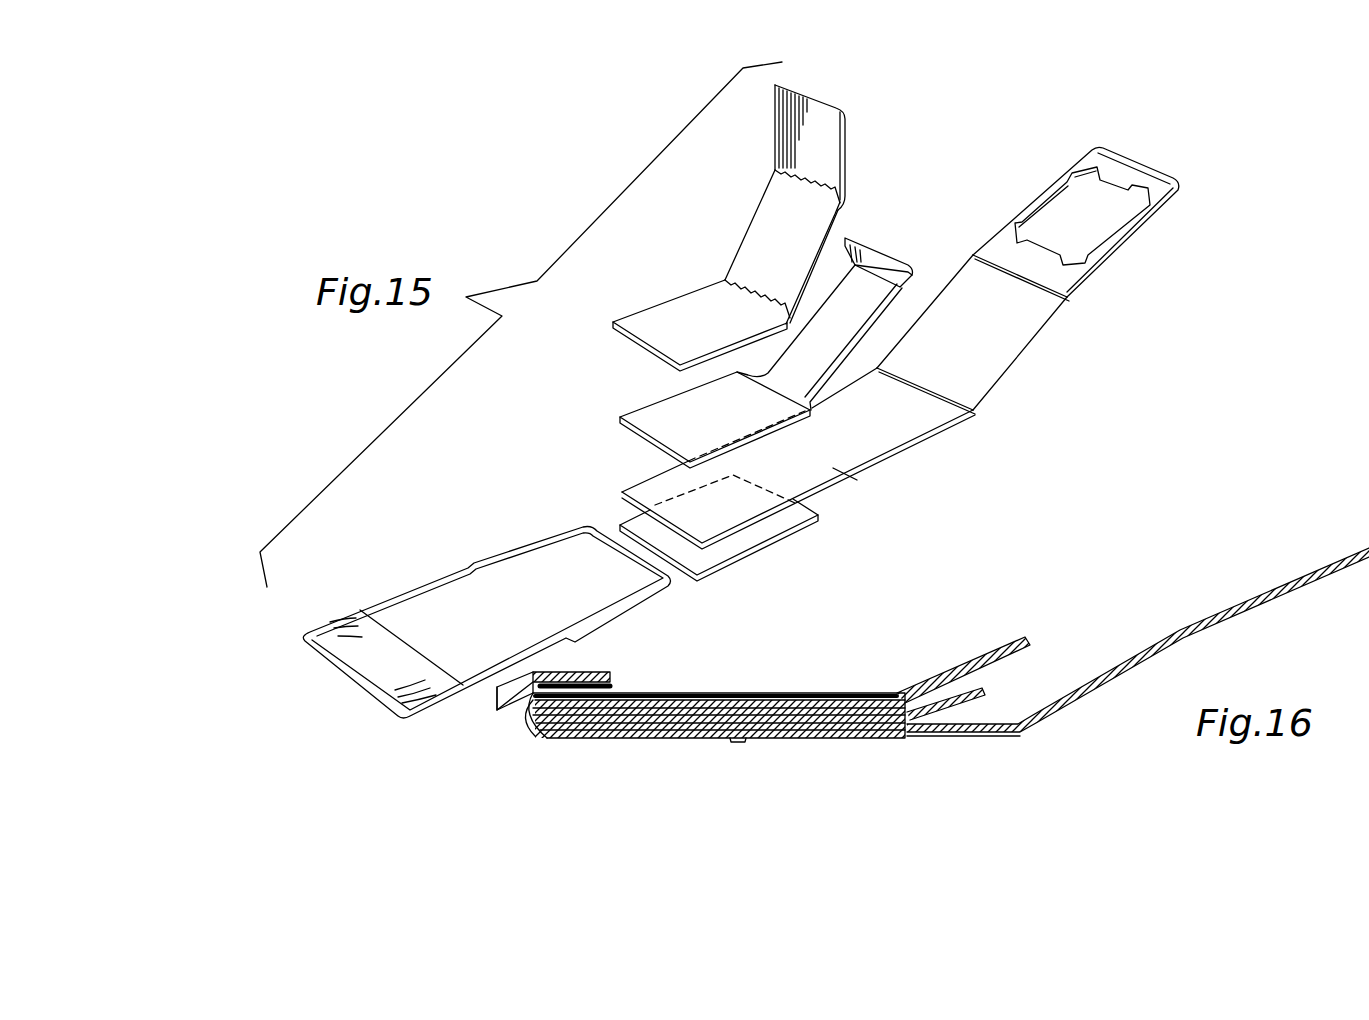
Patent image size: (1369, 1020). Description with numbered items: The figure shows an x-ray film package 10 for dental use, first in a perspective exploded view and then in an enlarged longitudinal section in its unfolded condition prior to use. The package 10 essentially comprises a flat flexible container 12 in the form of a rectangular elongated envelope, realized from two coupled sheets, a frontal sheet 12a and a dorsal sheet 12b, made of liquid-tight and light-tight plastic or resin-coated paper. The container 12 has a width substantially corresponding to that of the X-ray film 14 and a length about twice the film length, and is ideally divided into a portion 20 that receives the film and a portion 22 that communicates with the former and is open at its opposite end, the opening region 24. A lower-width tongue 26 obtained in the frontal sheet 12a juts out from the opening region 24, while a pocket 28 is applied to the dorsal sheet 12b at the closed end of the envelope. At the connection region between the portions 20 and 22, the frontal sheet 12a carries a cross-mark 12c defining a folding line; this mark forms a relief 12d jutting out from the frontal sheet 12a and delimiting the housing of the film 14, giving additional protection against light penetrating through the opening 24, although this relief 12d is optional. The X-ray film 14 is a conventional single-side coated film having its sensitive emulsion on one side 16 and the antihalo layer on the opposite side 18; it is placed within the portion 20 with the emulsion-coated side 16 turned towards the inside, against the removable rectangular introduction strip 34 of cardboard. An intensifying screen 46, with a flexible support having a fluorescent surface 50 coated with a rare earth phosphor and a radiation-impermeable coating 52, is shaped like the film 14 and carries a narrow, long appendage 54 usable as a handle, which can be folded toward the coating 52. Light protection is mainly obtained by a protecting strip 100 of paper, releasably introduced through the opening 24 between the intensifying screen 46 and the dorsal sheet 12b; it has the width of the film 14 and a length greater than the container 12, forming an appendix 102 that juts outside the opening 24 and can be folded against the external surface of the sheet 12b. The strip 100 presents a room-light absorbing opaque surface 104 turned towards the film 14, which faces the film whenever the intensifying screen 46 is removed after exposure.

In FIG. 16, the package 10 is at (933, 661).
In FIG. 16, the flat flexible container 12 is at (652, 745).
In FIG. 15, the frontal sheet 12a is at (488, 683).
In FIG. 16, the frontal sheet 12a is at (800, 741).
In FIG. 15, the dorsal sheet 12b is at (448, 597).
In FIG. 16, the dorsal sheet 12b is at (781, 672).
In FIG. 16, the cross-mark 12c is at (738, 742).
In FIG. 16, the relief 12d is at (737, 694).
In FIG. 15, the X-ray film 14 is at (805, 538).
In FIG. 16, the X-ray film 14 is at (610, 710).
In FIG. 15, the emulsion-coated side 16 is at (727, 543).
In FIG. 16, the emulsion-coated side 16 is at (650, 710).
In FIG. 15, the opposite side 18 is at (622, 522).
In FIG. 15, the film-receiving portion 20 is at (486, 612).
In FIG. 16, the film-receiving portion 20 is at (587, 669).
In FIG. 15, the open portion 22 is at (547, 540).
In FIG. 16, the open portion 22 is at (860, 747).
In FIG. 15, the opening region 24 is at (613, 530).
In FIG. 16, the opening region 24 is at (912, 735).
In FIG. 16, the tongue 26 is at (908, 738).
In FIG. 15, the pocket 28 is at (353, 636).
In FIG. 16, the pocket 28 is at (571, 672).
In FIG. 15, the introduction strip 34 is at (900, 359).
In FIG. 16, the introduction strip 34 is at (1020, 732).
In FIG. 15, the intensifying screen 46 is at (628, 432).
In FIG. 16, the intensifying screen 46 is at (913, 698).
In FIG. 15, the fluorescent surface 50 is at (676, 414).
In FIG. 16, the fluorescent surface 50 is at (693, 710).
In FIG. 15, the radiation-impermeable coating 52 is at (642, 412).
In FIG. 16, the radiation-impermeable coating 52 is at (723, 700).
In FIG. 15, the appendage 54 is at (838, 318).
In FIG. 16, the appendage 54 is at (948, 717).
In FIG. 15, the protecting strip 100 is at (764, 228).
In FIG. 16, the protecting strip 100 is at (868, 697).
In FIG. 15, the appendix 102 is at (848, 147).
In FIG. 16, the appendix 102 is at (992, 655).
In FIG. 15, the room-light absorbing opaque surface 104 is at (848, 212).
In FIG. 16, the room-light absorbing opaque surface 104 is at (800, 703).